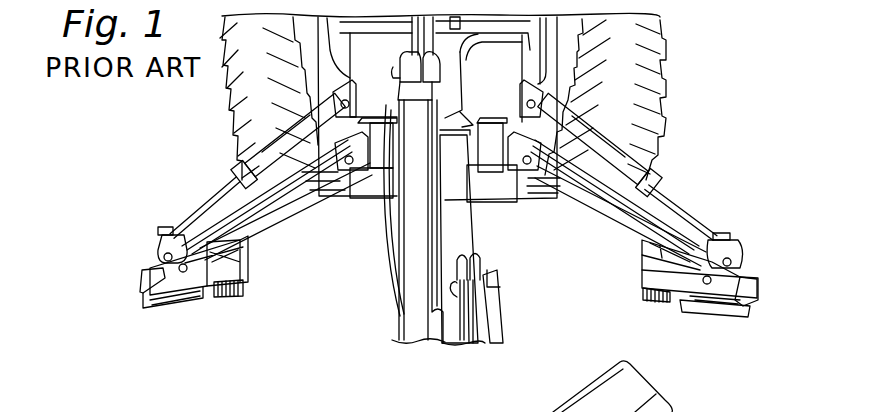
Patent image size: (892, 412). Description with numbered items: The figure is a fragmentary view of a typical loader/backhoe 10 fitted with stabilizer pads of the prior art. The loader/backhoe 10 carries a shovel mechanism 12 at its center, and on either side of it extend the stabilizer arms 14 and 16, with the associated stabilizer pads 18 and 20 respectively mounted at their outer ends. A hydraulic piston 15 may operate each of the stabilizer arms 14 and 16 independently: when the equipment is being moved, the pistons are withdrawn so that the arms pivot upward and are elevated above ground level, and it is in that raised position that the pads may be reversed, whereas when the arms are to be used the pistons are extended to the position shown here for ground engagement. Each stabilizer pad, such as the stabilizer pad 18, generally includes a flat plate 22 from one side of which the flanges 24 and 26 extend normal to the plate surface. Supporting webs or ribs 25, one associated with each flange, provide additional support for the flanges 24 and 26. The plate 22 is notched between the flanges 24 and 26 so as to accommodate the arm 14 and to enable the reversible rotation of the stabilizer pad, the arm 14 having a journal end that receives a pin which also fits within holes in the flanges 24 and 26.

The loader/backhoe 10 is at (361, 217).
The shovel mechanism 12 is at (462, 218).
The stabilizer arm 14 is at (268, 208).
The hydraulic piston 15 is at (250, 160).
The stabilizer arm 16 is at (602, 208).
The stabilizer pad 18 is at (155, 321).
The stabilizer pad 20 is at (687, 316).
The flat plate 22 is at (182, 290).
The flange 24 is at (210, 262).
The supporting web or rib 25 is at (150, 288).
The flange 26 is at (156, 246).